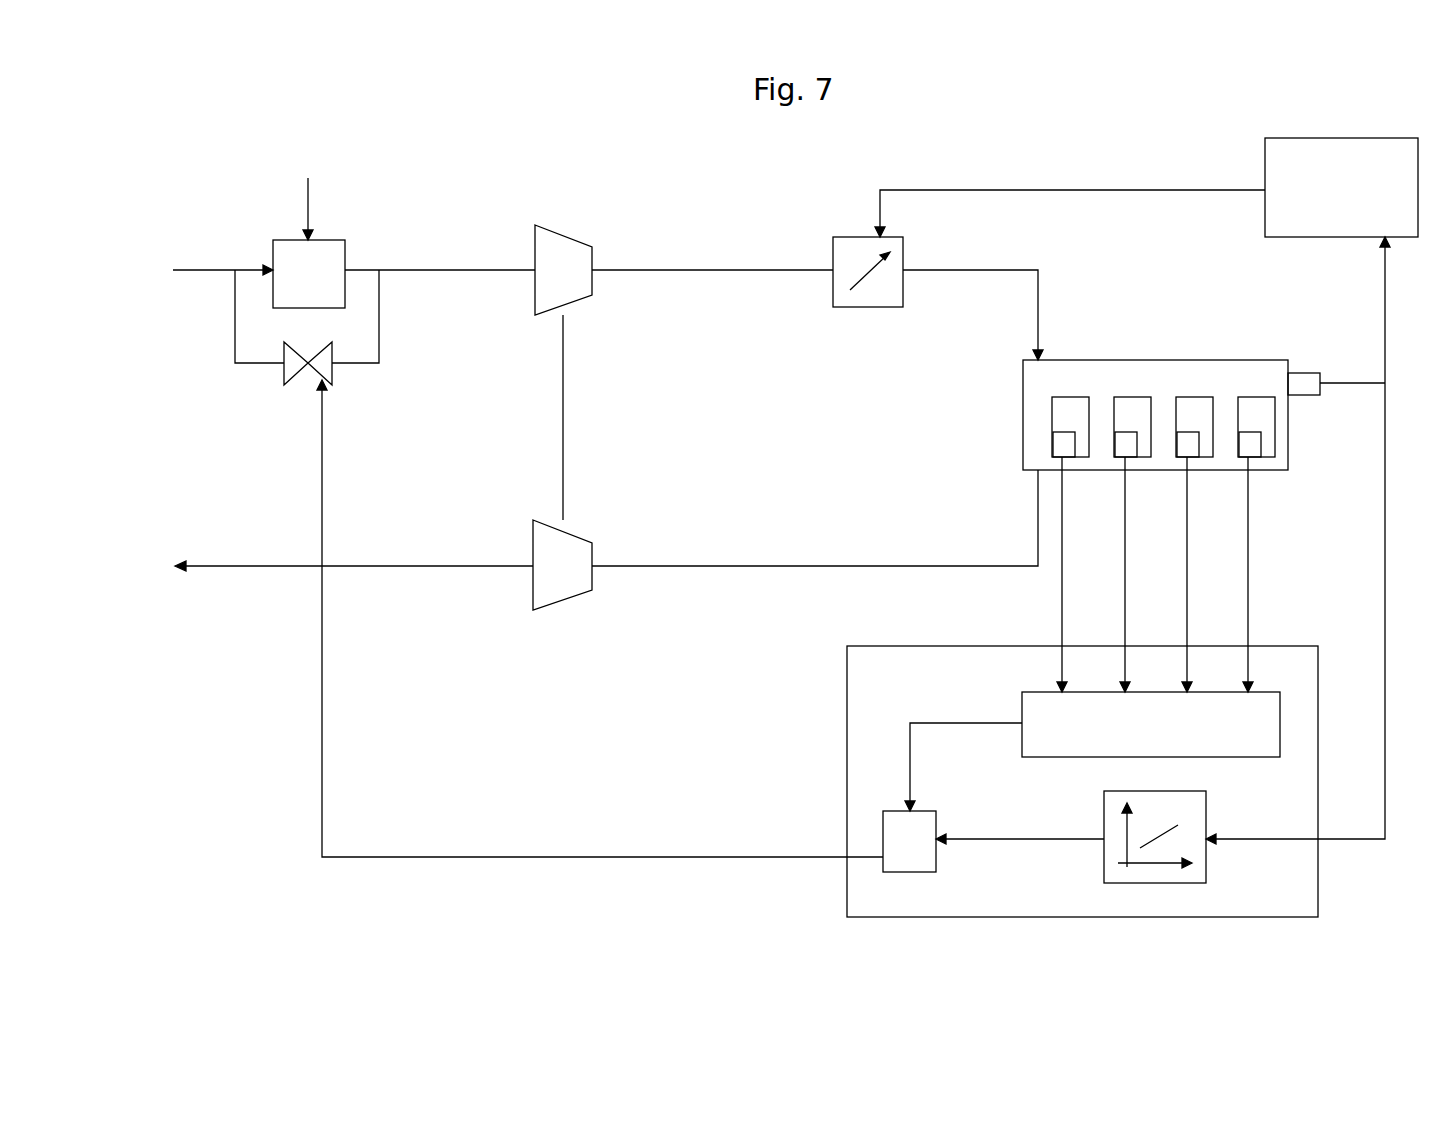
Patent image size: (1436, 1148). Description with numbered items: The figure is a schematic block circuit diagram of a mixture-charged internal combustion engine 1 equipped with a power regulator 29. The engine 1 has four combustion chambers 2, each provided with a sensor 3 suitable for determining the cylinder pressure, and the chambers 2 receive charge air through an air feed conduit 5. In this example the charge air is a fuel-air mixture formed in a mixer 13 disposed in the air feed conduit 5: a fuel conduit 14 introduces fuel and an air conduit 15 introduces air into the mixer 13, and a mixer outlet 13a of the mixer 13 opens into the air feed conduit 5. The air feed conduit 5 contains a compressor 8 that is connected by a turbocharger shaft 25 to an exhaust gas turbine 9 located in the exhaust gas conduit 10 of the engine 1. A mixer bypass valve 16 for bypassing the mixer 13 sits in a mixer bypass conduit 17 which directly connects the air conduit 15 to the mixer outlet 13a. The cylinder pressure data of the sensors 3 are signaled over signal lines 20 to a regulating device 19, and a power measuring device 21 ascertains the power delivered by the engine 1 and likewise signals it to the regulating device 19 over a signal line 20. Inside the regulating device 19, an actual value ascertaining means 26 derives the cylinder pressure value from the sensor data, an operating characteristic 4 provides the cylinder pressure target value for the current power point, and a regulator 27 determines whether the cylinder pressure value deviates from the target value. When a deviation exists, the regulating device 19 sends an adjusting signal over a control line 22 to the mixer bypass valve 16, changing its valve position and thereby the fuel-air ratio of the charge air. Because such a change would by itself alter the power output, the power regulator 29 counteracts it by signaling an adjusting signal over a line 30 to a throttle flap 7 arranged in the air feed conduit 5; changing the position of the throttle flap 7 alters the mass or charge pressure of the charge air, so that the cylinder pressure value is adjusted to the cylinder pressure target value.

The internal combustion engine 1 is at (1234, 344).
The combustion chambers 2 is at (1255, 412).
The sensor 3 is at (1251, 452).
The operating characteristic 4 is at (1104, 860).
The air feed conduit 5 is at (485, 268).
The throttle flap 7 is at (860, 237).
The compressor 8 is at (684, 270).
The exhaust gas turbine 9 is at (785, 540).
The exhaust gas conduit 10 is at (480, 567).
The mixer 13 is at (309, 274).
The mixer outlet 13a is at (355, 268).
The fuel conduit 14 is at (308, 198).
The air conduit 15 is at (205, 268).
The mixer bypass valve 16 is at (291, 403).
The mixer bypass conduit 17 is at (233, 337).
The regulating device 19 is at (847, 695).
The signal lines 20 is at (1386, 305).
The power measuring device 21 is at (1302, 383).
The control line 22 is at (597, 858).
The turbocharger shaft 25 is at (563, 413).
The actual value ascertaining means 26 is at (1086, 752).
The regulator 27 is at (993, 841).
The power regulator 29 is at (1341, 187).
The line 30 is at (1005, 190).